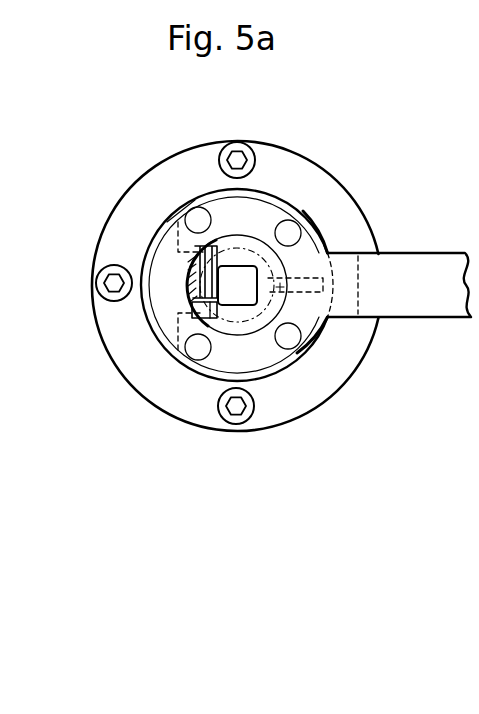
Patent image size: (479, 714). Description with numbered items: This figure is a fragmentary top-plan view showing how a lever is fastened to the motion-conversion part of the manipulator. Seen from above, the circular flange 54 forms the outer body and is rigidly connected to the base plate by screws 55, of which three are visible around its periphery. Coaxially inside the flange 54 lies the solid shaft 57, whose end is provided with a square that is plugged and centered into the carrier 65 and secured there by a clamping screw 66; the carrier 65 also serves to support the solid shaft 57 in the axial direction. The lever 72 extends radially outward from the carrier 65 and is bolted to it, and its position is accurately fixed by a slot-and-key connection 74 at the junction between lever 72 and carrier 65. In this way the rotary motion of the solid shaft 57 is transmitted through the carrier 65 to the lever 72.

The flange 54 is at (174, 174).
The screws 55 is at (101, 288).
The solid shaft 57 is at (241, 284).
The carrier 65 is at (197, 280).
The clamping screw 66 is at (203, 312).
The lever 72 is at (425, 306).
The slot-and-key connection 74 is at (300, 279).